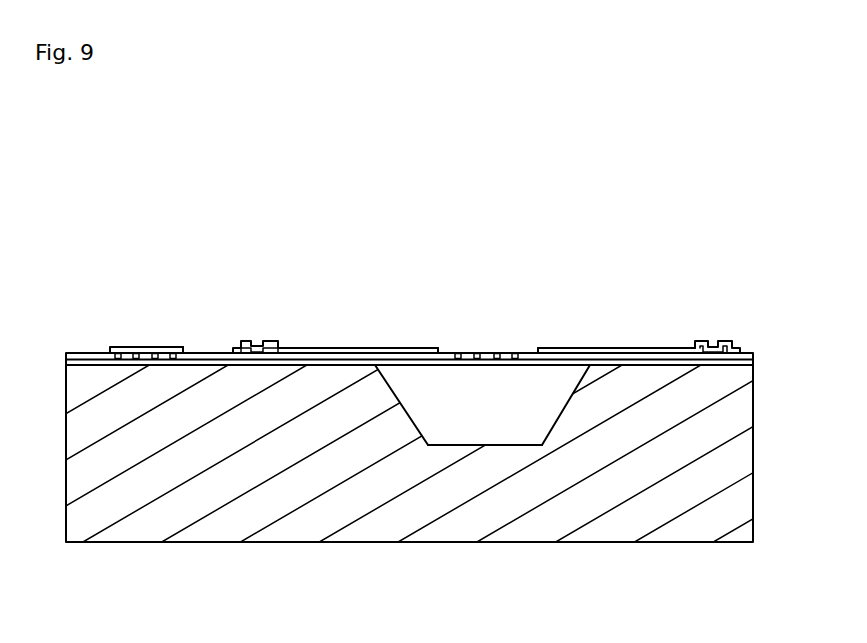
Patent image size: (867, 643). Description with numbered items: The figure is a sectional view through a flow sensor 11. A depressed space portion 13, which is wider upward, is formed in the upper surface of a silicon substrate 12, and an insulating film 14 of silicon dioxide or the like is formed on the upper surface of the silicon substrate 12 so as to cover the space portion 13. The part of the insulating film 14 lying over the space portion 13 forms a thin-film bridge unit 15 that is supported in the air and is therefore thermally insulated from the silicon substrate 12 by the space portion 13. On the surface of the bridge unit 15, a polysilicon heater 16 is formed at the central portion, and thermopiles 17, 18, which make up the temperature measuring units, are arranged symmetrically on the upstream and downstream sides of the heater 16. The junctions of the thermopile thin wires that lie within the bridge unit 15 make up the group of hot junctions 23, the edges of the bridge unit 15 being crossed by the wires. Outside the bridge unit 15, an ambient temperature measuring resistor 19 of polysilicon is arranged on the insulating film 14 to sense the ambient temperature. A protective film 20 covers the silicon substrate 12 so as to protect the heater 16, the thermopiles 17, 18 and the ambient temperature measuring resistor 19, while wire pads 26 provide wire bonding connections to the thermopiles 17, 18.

The flow sensor 11 is at (620, 206).
The silicon substrate 12 is at (648, 504).
The space portion 13 is at (480, 445).
The insulating film 14 is at (213, 366).
The bridge unit 15 is at (442, 366).
The heater 16 is at (498, 352).
The thermopile 17 is at (332, 348).
The thermopile 18 is at (613, 352).
The ambient temperature measuring resistor 19 is at (155, 348).
The protective film 20 is at (183, 352).
The hot junctions 23 is at (436, 352).
The wire pad 26 is at (263, 348).